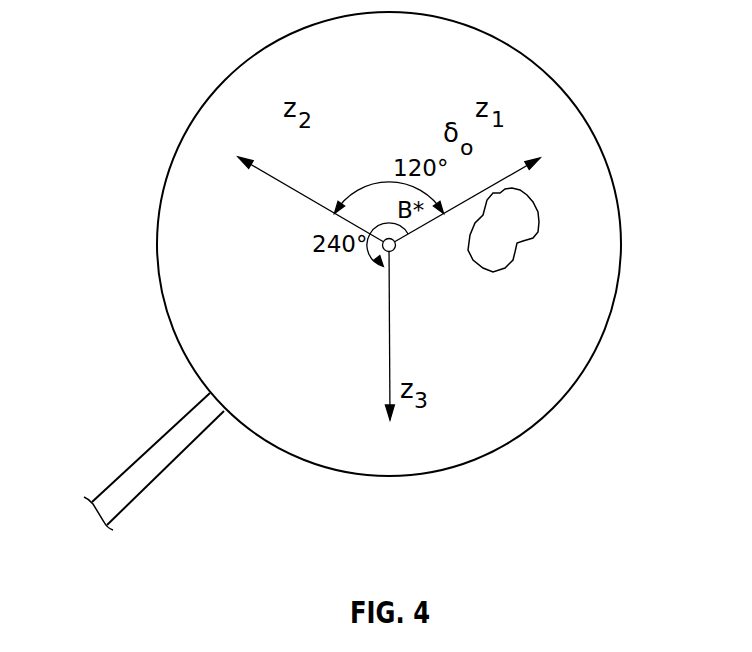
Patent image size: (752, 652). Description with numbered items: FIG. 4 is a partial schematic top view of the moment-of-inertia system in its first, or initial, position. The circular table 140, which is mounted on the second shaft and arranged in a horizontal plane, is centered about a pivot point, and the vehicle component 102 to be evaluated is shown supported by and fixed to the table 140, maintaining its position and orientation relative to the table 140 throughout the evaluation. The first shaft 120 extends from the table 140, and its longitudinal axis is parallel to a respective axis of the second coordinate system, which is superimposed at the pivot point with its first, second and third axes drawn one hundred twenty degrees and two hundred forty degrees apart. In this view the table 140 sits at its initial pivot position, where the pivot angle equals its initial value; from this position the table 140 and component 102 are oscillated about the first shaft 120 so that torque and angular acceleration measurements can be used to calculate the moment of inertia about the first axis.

The table 140 is at (457, 30).
The first shaft 120 is at (148, 448).
The vehicle component 102 is at (522, 190).